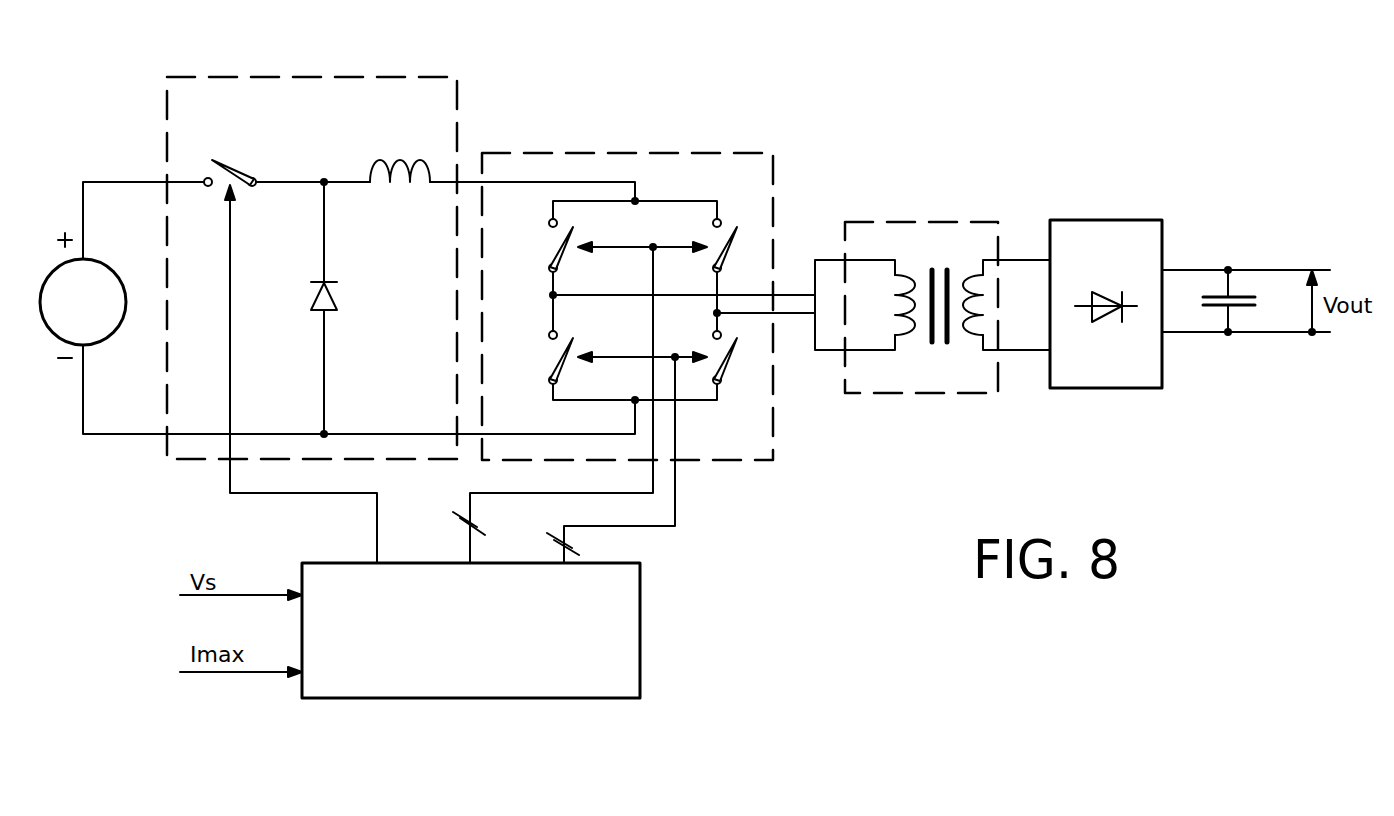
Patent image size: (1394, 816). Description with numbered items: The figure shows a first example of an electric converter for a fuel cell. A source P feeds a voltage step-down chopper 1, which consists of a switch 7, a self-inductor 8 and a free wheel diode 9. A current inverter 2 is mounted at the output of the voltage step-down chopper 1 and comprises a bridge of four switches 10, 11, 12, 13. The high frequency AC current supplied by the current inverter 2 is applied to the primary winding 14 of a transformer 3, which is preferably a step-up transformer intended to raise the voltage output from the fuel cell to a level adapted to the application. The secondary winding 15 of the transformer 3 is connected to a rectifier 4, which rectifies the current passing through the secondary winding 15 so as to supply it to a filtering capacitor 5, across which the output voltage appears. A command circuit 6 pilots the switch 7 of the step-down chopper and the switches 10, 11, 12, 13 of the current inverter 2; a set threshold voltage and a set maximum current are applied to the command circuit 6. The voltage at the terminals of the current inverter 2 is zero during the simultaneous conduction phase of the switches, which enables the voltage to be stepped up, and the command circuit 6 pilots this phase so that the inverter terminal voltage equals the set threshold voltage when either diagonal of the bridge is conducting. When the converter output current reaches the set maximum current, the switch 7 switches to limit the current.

The voltage step-down chopper 1 is at (333, 78).
The current inverter 2 is at (690, 170).
The transformer 3 is at (922, 230).
The rectifier 4 is at (1092, 232).
The filtering capacitor 5 is at (1240, 290).
The command circuit 6 is at (640, 635).
The switch 7 is at (243, 150).
The self-inductor 8 is at (397, 152).
The free wheel diode 9 is at (338, 296).
The switch 10 is at (551, 255).
The switch 11 is at (742, 235).
The switch 12 is at (733, 365).
The switch 13 is at (552, 350).
The primary winding 14 is at (873, 350).
The secondary winding 15 is at (975, 305).
The power source P is at (97, 332).